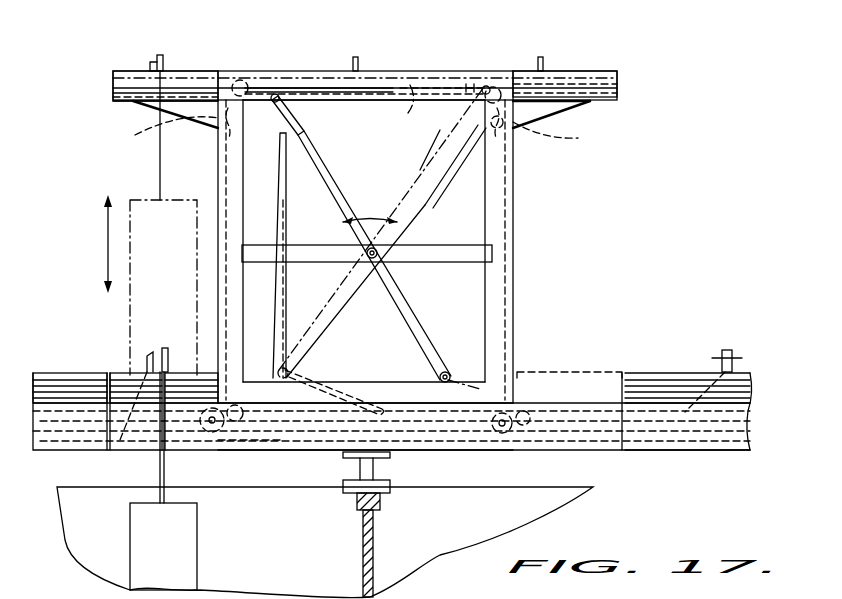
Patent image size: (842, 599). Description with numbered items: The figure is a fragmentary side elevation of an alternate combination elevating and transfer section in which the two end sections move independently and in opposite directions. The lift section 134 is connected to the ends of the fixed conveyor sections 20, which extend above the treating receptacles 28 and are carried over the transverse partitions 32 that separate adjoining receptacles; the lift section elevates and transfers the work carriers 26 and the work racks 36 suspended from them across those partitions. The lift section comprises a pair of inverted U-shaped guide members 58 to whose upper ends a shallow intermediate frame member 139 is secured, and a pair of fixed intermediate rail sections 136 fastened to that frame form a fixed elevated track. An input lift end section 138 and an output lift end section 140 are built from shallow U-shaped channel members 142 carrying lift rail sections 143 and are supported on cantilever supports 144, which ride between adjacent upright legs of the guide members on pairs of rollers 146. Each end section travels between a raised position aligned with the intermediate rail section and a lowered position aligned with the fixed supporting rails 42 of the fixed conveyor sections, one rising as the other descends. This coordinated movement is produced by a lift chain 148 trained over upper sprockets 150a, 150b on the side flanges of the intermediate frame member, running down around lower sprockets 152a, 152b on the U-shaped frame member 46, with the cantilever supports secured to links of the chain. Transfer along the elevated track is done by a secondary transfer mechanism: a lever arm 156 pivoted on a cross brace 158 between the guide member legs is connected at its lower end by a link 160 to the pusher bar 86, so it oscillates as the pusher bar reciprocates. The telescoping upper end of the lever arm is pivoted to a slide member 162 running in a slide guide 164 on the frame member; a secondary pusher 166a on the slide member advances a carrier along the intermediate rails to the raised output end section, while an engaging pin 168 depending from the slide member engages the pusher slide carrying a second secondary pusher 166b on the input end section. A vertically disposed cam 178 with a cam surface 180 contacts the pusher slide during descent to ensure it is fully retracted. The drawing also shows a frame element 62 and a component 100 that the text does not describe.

The fixed conveyor section 20 is at (74, 452).
The work carrier 26 is at (160, 62).
The treating receptacle 28 is at (288, 557).
The transverse partition 32 is at (375, 550).
The work rack 36 is at (132, 305).
The fixed supporting rail 42 is at (67, 375).
The U-shaped frame member 46 is at (400, 440).
The inverted U-shaped guide member 58 is at (500, 195).
The frame member 62 is at (750, 432).
The pusher bar 86 is at (750, 406).
The sensor 100 is at (148, 352).
The lift section 134 is at (520, 292).
The fixed intermediate rail section 136 is at (470, 71).
The input lift end section 138 is at (176, 70).
The intermediate frame member 139 is at (412, 90).
The output lift end section 140 is at (623, 77).
The U-shaped channel member 142 is at (113, 93).
The lift rail section 143 is at (200, 63).
The cantilever support 144 is at (165, 110).
The roller 146 is at (210, 130).
The lift chain 148 is at (222, 176).
The sprocket 150a is at (278, 68).
The sprocket 150b is at (547, 90).
The lower sprocket 152a is at (212, 440).
The lower sprocket 152b is at (548, 372).
The lever arm 156 is at (412, 330).
The cross brace 158 is at (415, 250).
The link 160 is at (425, 380).
The slide member 162 is at (466, 92).
The slide guide 164 is at (425, 127).
The secondary pusher 166a is at (378, 71).
The secondary pusher 166b is at (113, 80).
The engaging pin 168 is at (282, 100).
The cam 178 is at (283, 283).
The cam surface 180 is at (279, 175).